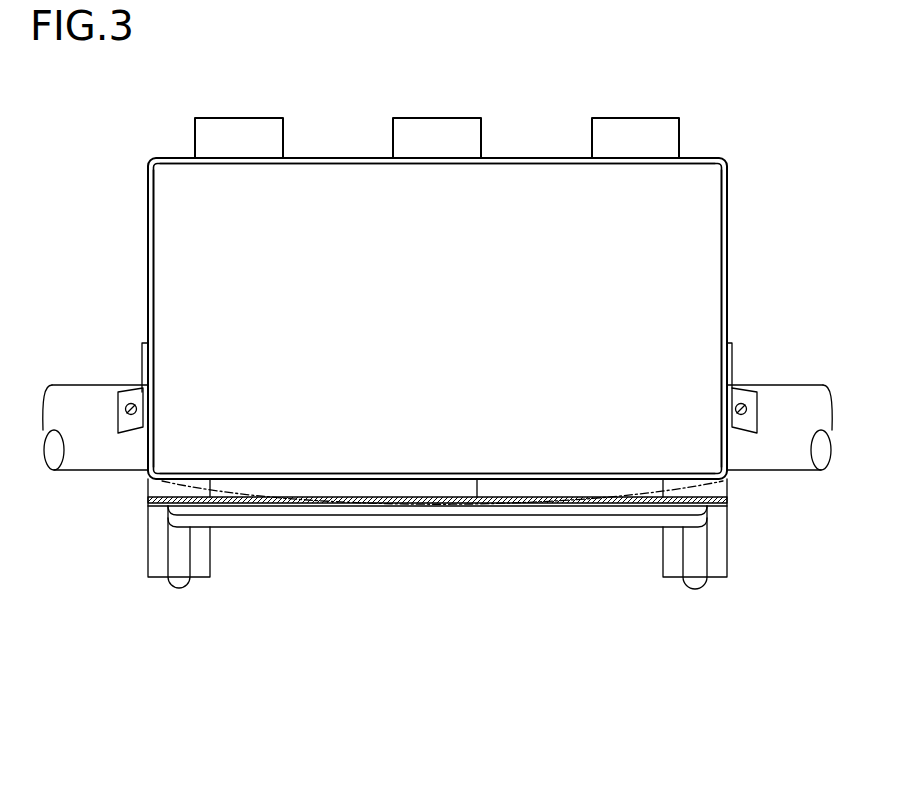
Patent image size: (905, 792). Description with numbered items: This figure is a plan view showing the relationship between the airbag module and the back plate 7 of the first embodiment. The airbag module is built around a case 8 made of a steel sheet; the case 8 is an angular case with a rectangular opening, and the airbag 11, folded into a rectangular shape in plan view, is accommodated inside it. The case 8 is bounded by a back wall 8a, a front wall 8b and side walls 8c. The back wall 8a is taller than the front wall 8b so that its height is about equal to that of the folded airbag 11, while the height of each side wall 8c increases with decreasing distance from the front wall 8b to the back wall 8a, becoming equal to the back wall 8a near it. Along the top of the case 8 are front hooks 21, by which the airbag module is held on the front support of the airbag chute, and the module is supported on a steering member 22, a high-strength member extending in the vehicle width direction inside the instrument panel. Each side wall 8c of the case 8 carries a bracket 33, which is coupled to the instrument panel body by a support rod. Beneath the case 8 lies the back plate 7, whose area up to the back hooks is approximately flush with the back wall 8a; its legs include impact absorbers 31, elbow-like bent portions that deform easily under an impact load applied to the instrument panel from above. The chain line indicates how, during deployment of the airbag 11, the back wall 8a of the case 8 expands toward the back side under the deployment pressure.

The back plate 7 is at (382, 497).
The case 8 is at (728, 160).
The back wall 8a is at (477, 497).
The front wall 8b is at (535, 156).
The side wall 8c is at (148, 252).
The airbag 11 is at (178, 204).
The front hook 21 is at (241, 117).
The steering member 22 is at (802, 392).
The impact absorber 31 is at (150, 548).
The bracket 33 is at (133, 390).